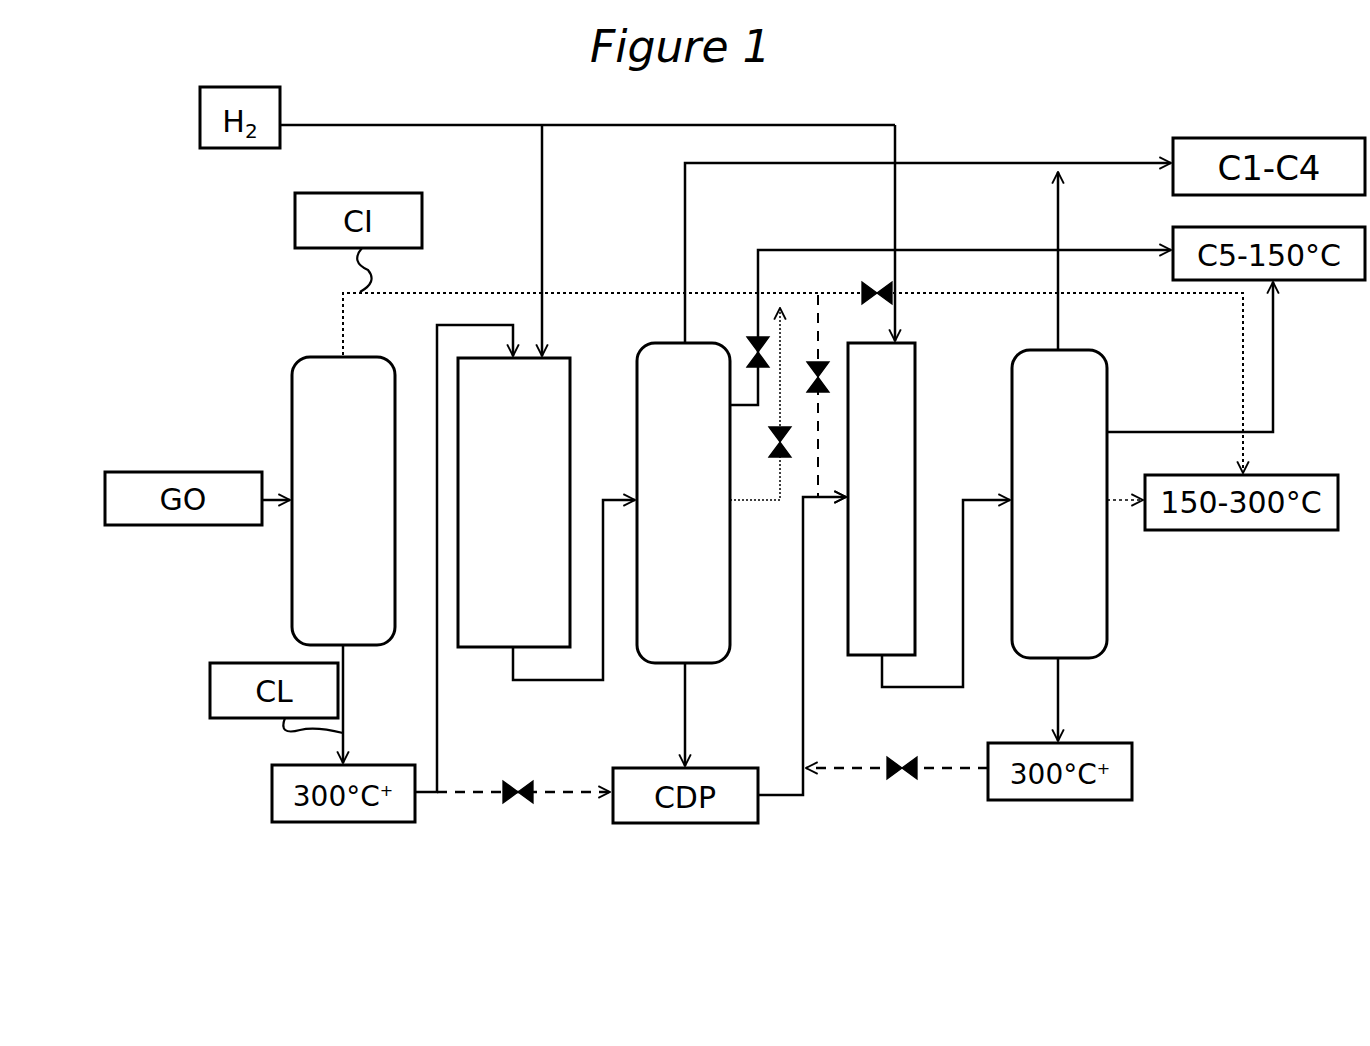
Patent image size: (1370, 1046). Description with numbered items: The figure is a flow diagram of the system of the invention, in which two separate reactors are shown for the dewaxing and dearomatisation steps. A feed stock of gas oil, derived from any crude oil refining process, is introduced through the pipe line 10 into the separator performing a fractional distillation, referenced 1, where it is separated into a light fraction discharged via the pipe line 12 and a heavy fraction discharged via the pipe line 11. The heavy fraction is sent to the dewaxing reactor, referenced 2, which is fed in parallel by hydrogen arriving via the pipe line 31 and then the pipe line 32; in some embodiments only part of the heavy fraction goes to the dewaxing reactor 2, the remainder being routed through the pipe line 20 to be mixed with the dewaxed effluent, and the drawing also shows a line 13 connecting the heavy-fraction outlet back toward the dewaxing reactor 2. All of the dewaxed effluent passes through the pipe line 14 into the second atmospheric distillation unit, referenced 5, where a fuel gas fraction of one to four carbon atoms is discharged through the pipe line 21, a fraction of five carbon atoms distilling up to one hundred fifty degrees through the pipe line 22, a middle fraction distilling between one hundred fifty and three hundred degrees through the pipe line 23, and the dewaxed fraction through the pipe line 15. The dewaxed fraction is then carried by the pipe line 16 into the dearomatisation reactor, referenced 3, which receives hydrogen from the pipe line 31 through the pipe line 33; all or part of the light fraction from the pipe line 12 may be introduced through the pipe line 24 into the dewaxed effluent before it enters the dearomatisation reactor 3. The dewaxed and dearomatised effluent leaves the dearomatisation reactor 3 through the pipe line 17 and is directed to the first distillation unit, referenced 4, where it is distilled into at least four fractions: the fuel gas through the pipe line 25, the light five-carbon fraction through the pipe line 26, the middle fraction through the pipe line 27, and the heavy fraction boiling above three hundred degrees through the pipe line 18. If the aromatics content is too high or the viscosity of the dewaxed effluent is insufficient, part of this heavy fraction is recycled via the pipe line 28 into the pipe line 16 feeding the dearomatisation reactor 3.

The fractional distillation separator DF 1 is at (292, 591).
The dewaxing reactor R1 2 is at (484, 650).
The dearomatisation reactor R2 3 is at (862, 658).
The distillation unit DA1 4 is at (1078, 660).
The atmospheric distillation unit DA2 5 is at (695, 665).
The pipe line 10 is at (272, 505).
The pipe line 11 is at (346, 668).
The pipe line 12 is at (478, 292).
The 300°C+ fraction recycle line to DP 13 is at (440, 742).
The pipe line 14 is at (560, 682).
The pipe line 15 is at (688, 728).
The pipe line 16 is at (806, 744).
The pipe line 17 is at (968, 662).
The pipe line 18 is at (1060, 710).
The pipe line 20 is at (476, 800).
The pipe line 21 is at (690, 208).
The pipe line 22 is at (744, 408).
The pipe line 23 is at (752, 505).
The pipe line 24 is at (814, 330).
The pipe line 25 is at (1062, 328).
The pipe line 26 is at (1166, 430).
The pipe line 27 is at (1130, 506).
The pipe line 28 is at (962, 790).
The pipe line 31 is at (478, 100).
The pipe line 32 is at (548, 224).
The pipe line 33 is at (900, 212).